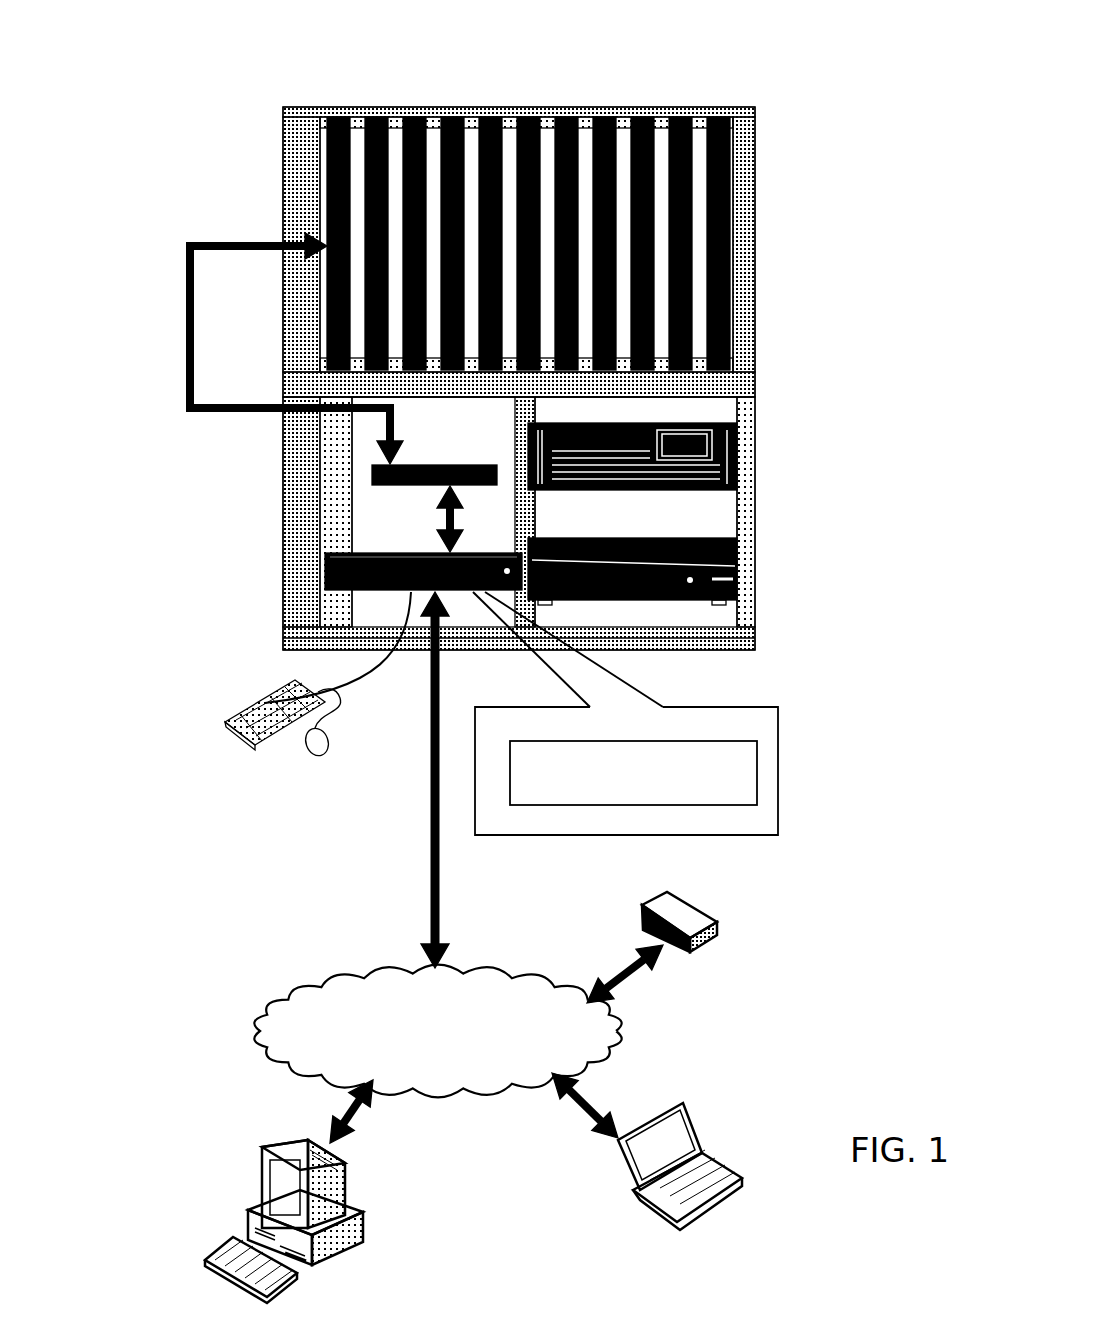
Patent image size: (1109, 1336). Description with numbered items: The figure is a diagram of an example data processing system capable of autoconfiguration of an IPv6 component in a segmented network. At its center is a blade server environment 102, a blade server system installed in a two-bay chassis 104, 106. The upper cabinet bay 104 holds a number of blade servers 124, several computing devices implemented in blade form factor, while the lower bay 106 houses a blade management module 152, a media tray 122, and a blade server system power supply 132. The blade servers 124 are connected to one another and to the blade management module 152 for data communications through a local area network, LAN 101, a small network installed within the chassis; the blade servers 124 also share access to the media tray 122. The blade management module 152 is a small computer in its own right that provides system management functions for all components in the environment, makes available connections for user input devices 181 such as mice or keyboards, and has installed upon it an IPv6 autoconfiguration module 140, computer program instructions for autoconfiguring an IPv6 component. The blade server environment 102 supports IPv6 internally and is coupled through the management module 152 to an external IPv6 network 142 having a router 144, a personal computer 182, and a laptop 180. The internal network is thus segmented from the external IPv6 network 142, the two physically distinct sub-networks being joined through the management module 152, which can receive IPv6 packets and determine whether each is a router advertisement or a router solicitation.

The blade server environment 102 is at (853, 64).
The cabinet bay 104 is at (282, 196).
The chassis bay 106 is at (282, 472).
The blade servers 124 is at (752, 250).
The local area network (LAN) 101 is at (493, 462).
The blade server system power supply 132 is at (763, 460).
The media tray 122 is at (765, 571).
The blade management module 152 is at (303, 571).
The IPv6 autoconfiguration module 140 is at (687, 799).
The user input devices 181 is at (313, 844).
The IPv6 network 142 is at (518, 1041).
The router 144 is at (838, 946).
The laptop 180 is at (820, 1237).
The personal computer 182 is at (490, 1252).